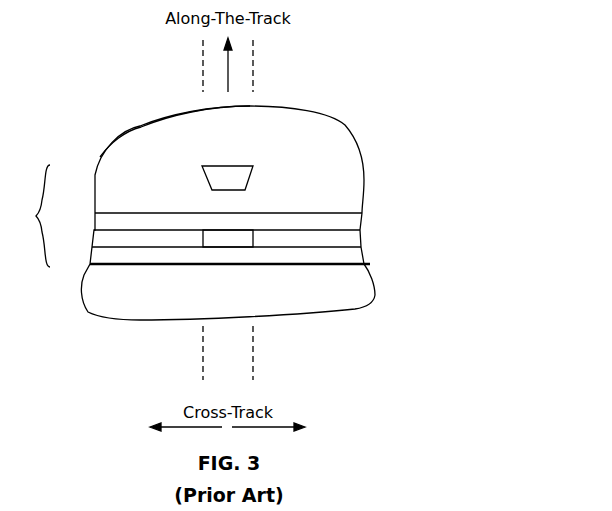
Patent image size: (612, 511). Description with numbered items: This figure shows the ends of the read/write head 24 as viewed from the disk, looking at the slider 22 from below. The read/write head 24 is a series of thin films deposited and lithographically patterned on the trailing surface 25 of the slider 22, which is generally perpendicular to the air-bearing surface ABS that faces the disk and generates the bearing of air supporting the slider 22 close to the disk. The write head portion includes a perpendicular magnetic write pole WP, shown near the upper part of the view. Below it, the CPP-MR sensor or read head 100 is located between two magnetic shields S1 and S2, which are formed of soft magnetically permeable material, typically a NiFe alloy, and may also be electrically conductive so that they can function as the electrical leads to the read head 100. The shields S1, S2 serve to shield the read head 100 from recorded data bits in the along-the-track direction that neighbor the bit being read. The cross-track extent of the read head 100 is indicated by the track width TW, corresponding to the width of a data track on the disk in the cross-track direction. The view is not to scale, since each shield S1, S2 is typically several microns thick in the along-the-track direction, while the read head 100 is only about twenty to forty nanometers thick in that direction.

The slider 22 is at (107, 313).
The read/write head 24 is at (32, 216).
The trailing surface 25 is at (93, 263).
The read head 100 is at (244, 240).
The magnetic shield S1 is at (137, 263).
The magnetic shield S2 is at (358, 223).
The write pole WP is at (250, 178).
The air-bearing surface ABS is at (141, 131).
The track width TW is at (153, 363).